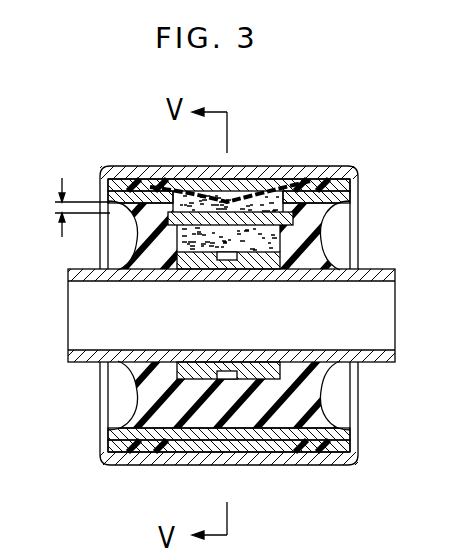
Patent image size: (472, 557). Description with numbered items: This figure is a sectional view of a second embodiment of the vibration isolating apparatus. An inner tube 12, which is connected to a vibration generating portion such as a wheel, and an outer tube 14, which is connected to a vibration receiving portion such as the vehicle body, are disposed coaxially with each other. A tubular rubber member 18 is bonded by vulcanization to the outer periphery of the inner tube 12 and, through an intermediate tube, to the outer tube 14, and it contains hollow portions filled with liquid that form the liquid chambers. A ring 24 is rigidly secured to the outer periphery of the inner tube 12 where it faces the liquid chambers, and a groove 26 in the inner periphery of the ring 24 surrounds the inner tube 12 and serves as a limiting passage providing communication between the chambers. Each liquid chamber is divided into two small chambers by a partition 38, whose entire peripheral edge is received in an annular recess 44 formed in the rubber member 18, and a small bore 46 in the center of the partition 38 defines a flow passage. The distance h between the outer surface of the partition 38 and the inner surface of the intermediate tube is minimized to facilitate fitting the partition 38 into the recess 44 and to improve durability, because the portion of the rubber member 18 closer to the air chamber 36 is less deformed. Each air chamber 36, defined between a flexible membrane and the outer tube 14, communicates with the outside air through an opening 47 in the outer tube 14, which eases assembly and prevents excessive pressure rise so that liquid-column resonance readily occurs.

The inner tube 12 is at (395, 277).
The outer tube 14 is at (327, 170).
The rubber member 18 is at (337, 253).
The ring 24 is at (262, 268).
The groove 26 is at (221, 269).
The air chamber 36 is at (193, 178).
The partition 38 is at (273, 186).
The annular recess 44 is at (336, 220).
The small bore 46 is at (237, 201).
The opening 47 is at (226, 178).
The distance h is at (57, 203).